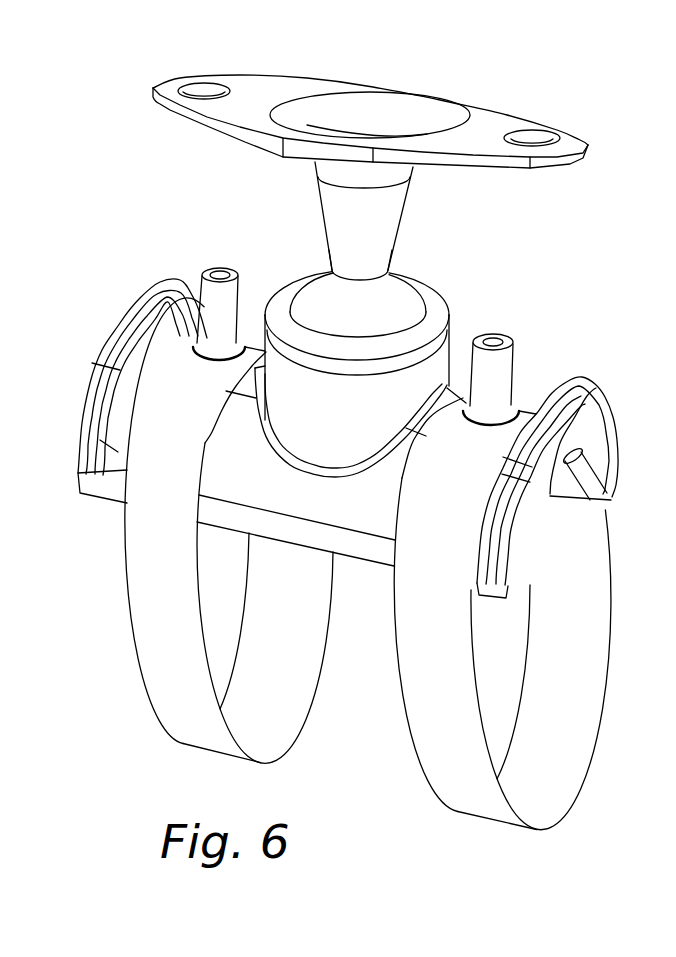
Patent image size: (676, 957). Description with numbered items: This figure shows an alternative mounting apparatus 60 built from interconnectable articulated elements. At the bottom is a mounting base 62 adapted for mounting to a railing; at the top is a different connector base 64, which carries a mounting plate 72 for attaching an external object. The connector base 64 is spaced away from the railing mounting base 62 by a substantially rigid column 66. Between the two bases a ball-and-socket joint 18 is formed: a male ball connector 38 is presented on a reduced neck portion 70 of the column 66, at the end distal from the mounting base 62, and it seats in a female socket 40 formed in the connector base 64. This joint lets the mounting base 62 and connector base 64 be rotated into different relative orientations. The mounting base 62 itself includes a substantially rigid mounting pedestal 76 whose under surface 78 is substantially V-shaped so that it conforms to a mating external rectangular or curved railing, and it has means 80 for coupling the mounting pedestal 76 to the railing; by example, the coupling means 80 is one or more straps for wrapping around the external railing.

The mounting apparatus 60 is at (574, 280).
The connector base 64 is at (223, 136).
The mounting plate 72 is at (493, 121).
The column 66 is at (351, 234).
The reduced neck portion 70 is at (385, 262).
The ball-and-socket joint 18 is at (315, 275).
The male ball connector 38 is at (374, 323).
The female socket 40 is at (432, 306).
The mounting base 62 is at (160, 279).
The mounting pedestal 76 is at (590, 377).
The V-shaped under surface 78 is at (573, 492).
The coupling means 80 is at (305, 715).